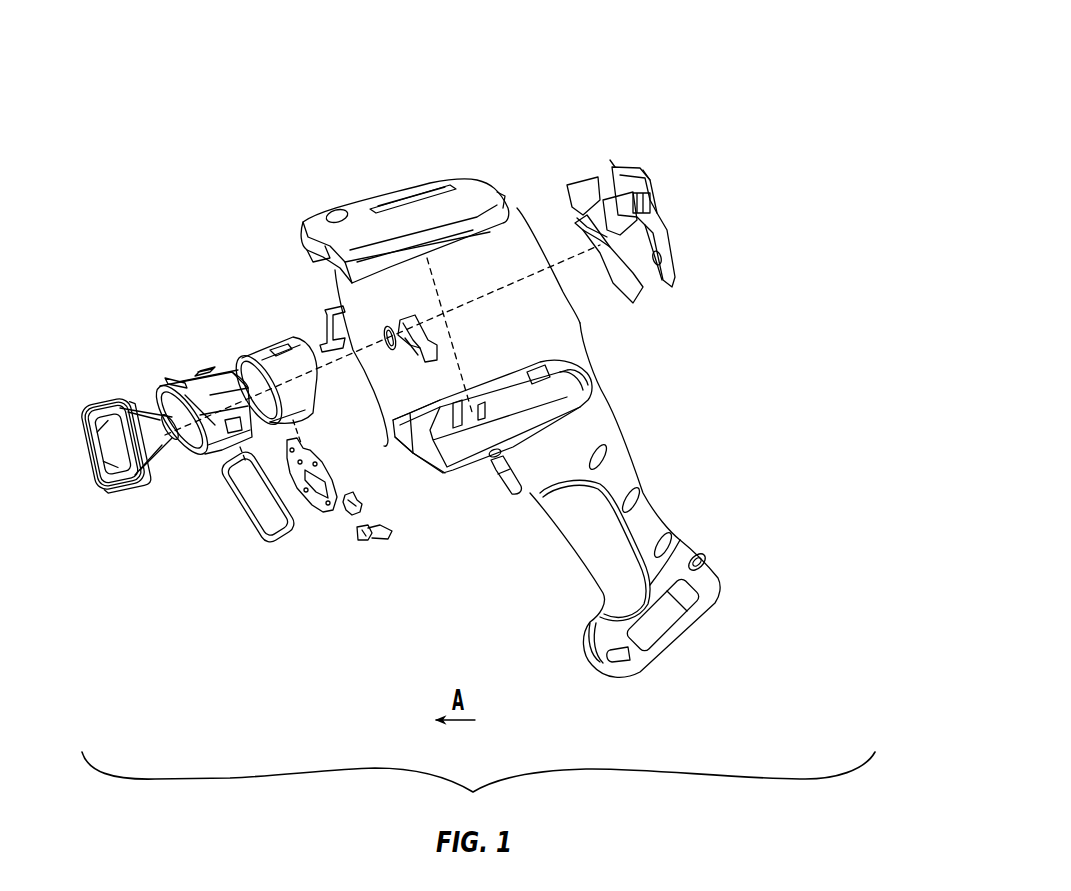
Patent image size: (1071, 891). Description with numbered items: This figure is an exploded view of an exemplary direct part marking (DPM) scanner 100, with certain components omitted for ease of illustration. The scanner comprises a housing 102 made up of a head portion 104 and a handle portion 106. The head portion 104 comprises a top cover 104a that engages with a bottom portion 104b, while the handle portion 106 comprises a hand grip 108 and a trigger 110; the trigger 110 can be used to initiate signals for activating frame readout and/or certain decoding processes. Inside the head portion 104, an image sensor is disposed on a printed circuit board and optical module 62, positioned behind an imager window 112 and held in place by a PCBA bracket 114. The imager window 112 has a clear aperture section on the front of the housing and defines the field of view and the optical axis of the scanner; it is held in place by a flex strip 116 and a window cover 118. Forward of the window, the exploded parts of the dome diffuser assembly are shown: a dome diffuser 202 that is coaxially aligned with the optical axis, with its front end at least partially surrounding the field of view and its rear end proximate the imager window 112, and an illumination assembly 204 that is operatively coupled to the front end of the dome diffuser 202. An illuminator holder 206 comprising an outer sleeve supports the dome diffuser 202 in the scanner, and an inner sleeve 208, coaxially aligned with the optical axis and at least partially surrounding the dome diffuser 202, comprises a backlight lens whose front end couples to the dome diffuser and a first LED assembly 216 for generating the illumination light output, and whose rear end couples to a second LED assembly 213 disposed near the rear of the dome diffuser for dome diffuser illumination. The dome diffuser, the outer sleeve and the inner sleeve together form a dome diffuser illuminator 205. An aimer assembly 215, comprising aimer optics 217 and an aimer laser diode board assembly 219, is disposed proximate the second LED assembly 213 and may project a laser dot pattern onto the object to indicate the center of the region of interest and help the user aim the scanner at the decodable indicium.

The direct part marking scanner 100 is at (641, 62).
The housing 102 is at (580, 323).
The head portion 104 is at (353, 350).
The top cover 104a is at (346, 210).
The bottom portion 104b is at (428, 460).
The handle portion 106 is at (657, 492).
The hand grip 108 is at (597, 573).
The trigger 110 is at (514, 495).
The imager window 112 is at (392, 351).
The PCBA bracket 114 is at (583, 180).
The flex strip 116 is at (323, 330).
The window cover 118 is at (420, 321).
The printed circuit board and optical module 62 is at (660, 185).
The dome diffuser 202 is at (130, 406).
The illumination assembly 204 is at (143, 493).
The dome diffuser illuminator 205 is at (175, 322).
The illuminator holder 206 is at (178, 373).
The inner sleeve 208 is at (258, 348).
The second LED assembly 213 is at (323, 510).
The aimer assembly 215 is at (375, 506).
The first LED assembly 216 is at (262, 522).
The aimer optics 217 is at (349, 505).
The aimer laser diode board assembly 219 is at (379, 530).